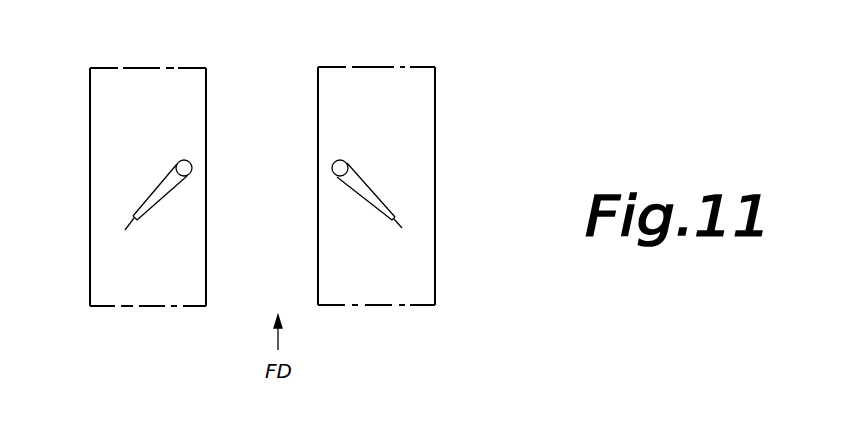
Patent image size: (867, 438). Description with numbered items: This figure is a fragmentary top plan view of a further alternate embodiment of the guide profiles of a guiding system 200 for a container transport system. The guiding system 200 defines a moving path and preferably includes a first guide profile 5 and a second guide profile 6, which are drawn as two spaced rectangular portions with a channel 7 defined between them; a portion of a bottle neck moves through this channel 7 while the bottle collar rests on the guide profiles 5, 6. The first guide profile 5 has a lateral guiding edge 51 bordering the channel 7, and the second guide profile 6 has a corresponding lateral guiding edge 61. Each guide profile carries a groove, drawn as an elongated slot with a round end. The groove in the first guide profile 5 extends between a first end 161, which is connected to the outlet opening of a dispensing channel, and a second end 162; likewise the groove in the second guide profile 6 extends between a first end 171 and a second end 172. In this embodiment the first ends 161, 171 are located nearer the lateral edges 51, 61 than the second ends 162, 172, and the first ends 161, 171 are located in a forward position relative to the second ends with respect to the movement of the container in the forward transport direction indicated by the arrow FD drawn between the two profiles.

The first guide profile 5 is at (143, 100).
The channel 7 is at (213, 107).
The lateral guiding edge 51 is at (207, 273).
The first end 161 is at (190, 162).
The second end 162 is at (125, 230).
The second guide profile 6 is at (405, 107).
The lateral guiding edge 61 is at (318, 120).
The first end 171 is at (334, 162).
The second end 172 is at (402, 228).
The guiding system 200 is at (467, 56).